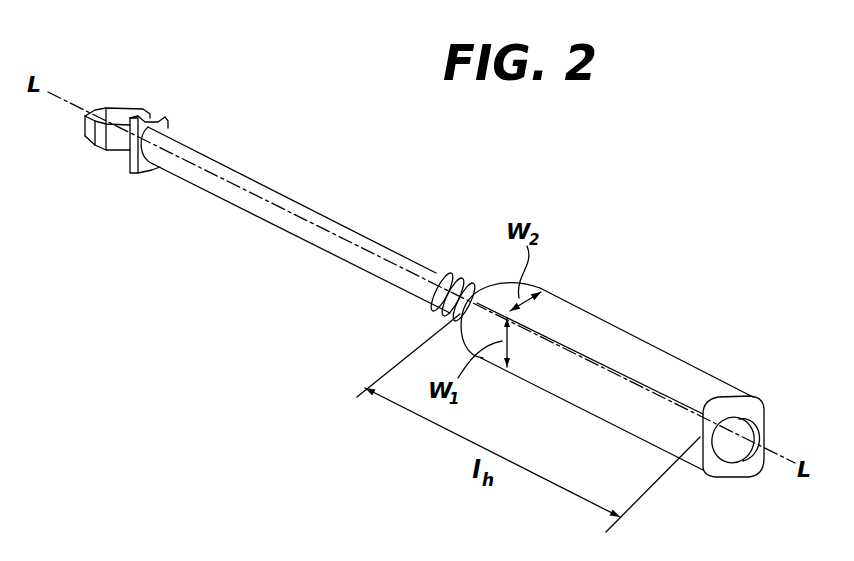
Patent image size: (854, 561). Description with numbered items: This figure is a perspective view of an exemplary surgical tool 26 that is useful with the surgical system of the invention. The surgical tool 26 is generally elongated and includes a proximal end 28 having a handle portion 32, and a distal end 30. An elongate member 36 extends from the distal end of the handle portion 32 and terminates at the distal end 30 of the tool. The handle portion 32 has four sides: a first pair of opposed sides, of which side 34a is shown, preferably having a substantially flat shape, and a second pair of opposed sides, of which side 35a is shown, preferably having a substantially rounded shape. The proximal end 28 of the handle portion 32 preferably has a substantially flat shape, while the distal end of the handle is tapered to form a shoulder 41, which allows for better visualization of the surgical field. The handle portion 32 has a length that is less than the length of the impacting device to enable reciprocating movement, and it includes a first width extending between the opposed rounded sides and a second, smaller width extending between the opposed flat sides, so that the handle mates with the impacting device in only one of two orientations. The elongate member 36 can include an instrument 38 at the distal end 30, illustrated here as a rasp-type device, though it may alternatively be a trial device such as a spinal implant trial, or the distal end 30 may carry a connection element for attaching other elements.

The surgical tool 26 is at (627, 212).
The proximal end 28 is at (698, 434).
The distal end 30 is at (132, 180).
The handle portion 32 is at (702, 387).
The first opposed side 34a is at (588, 388).
The second opposed side 35a is at (628, 356).
The elongate member 36 is at (278, 216).
The instrument 38 is at (122, 112).
The shoulder 41 is at (488, 284).